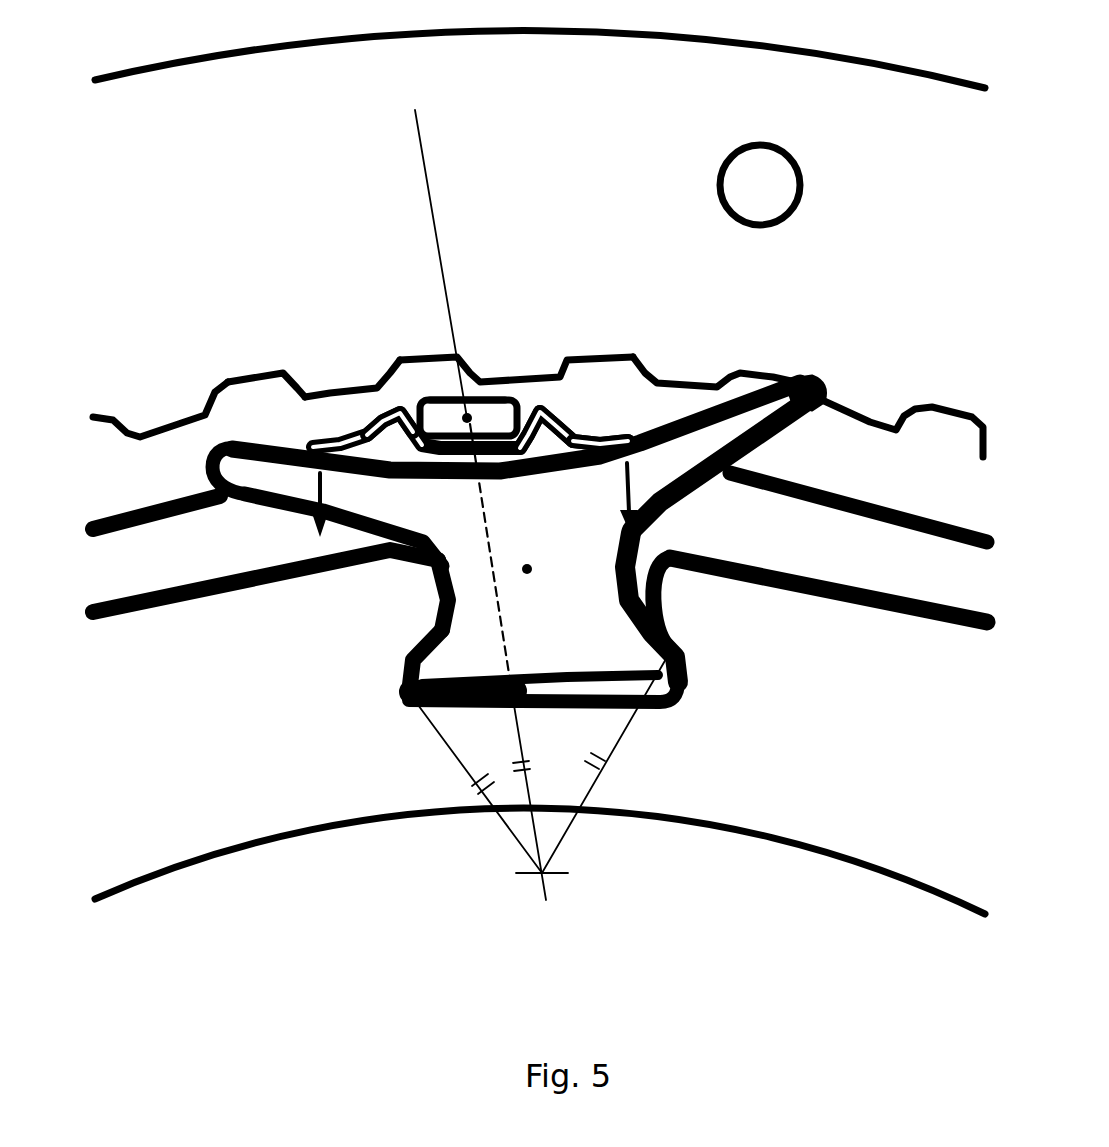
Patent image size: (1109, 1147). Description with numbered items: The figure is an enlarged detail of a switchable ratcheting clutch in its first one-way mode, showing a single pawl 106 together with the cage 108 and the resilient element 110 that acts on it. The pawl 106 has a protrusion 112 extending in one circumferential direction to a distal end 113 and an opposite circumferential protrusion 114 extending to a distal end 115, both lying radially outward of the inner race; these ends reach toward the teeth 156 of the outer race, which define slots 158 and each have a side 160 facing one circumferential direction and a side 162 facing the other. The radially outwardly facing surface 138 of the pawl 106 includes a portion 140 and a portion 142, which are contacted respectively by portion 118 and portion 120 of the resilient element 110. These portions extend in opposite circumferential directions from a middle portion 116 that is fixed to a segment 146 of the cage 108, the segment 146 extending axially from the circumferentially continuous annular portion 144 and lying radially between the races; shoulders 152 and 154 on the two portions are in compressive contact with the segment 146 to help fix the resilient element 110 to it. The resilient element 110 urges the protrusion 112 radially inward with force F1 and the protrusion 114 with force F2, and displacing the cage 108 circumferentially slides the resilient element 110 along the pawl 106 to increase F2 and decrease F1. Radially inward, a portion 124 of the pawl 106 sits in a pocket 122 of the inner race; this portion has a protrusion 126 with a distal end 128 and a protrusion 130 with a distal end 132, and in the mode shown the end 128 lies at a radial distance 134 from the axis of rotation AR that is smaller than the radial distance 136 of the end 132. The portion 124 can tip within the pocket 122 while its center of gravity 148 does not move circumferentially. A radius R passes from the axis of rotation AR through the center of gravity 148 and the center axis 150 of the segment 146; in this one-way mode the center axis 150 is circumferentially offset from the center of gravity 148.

The pawl 106 is at (642, 570).
The cage 108 is at (158, 488).
The resilient element 110 is at (380, 402).
The protrusion 112 is at (275, 467).
The distal end 113 is at (200, 490).
The circumferential protrusion 114 is at (702, 443).
The distal end 115 is at (807, 383).
The middle portion 116 is at (436, 398).
The portion 118 is at (353, 440).
The portion 120 is at (577, 412).
The pocket 122 is at (425, 631).
The portion 124 is at (548, 615).
The protrusion 126 is at (428, 677).
The distal end 128 is at (405, 697).
The protrusion 130 is at (640, 653).
The distal end 132 is at (685, 670).
The radial distance 134 is at (455, 760).
The radial distance 136 is at (615, 755).
The radially outwardly facing surface 138 is at (497, 422).
The portion 140 is at (292, 440).
The portion 142 is at (656, 396).
The circumferentially continuous annular portion 144 is at (203, 510).
The segment 146 is at (491, 456).
The center of gravity 148 is at (527, 565).
The center axis 150 is at (464, 413).
The shoulder 152 is at (381, 390).
The shoulder 154 is at (535, 408).
The tooth 156 is at (178, 407).
The slot 158 is at (245, 398).
The side 160 is at (820, 385).
The side 162 is at (893, 405).
The radius R is at (420, 127).
The force F1 is at (318, 487).
The force F2 is at (655, 485).
The axis of rotation AR is at (540, 875).